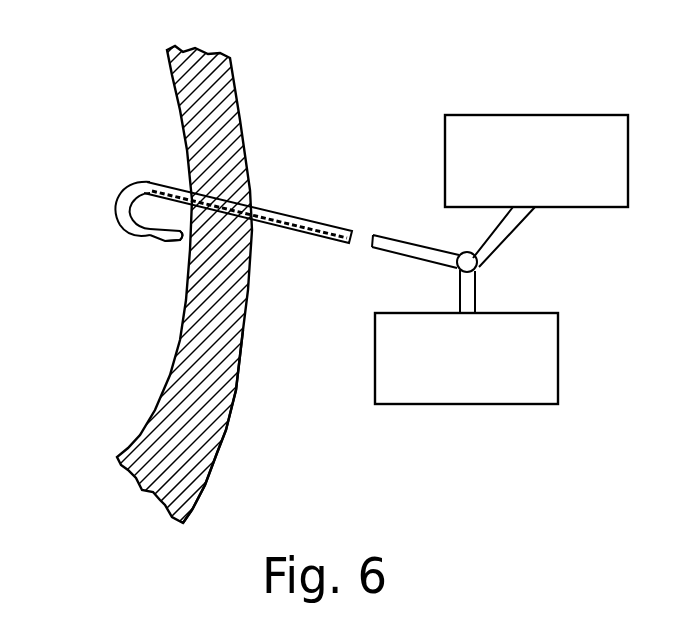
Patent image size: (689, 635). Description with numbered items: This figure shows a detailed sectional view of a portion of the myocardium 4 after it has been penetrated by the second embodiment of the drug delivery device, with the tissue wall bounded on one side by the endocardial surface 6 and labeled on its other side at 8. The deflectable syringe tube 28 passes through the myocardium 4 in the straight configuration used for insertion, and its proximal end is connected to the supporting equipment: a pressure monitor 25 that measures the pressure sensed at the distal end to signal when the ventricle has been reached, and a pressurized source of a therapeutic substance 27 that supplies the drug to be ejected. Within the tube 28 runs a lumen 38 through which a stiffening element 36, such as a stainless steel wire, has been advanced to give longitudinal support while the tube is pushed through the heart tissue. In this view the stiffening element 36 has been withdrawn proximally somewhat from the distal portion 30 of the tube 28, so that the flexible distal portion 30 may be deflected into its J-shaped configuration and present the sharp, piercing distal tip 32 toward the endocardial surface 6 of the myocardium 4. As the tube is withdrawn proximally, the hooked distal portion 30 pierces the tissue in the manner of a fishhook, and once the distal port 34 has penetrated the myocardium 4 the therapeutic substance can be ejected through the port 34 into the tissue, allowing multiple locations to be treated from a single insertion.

The myocardium 4 is at (205, 363).
The endocardial surface 6 is at (182, 325).
The inner tissue surface 8 is at (217, 453).
The pressure monitor 25 is at (518, 115).
The pressurized source of a therapeutic substance 27 is at (527, 313).
The deflectable syringe tube 28 is at (295, 200).
The distal portion 30 is at (132, 187).
The distal tip 32 is at (176, 237).
The distal port 34 is at (160, 237).
The stiffening element 36 is at (303, 233).
The lumen 38 is at (350, 235).